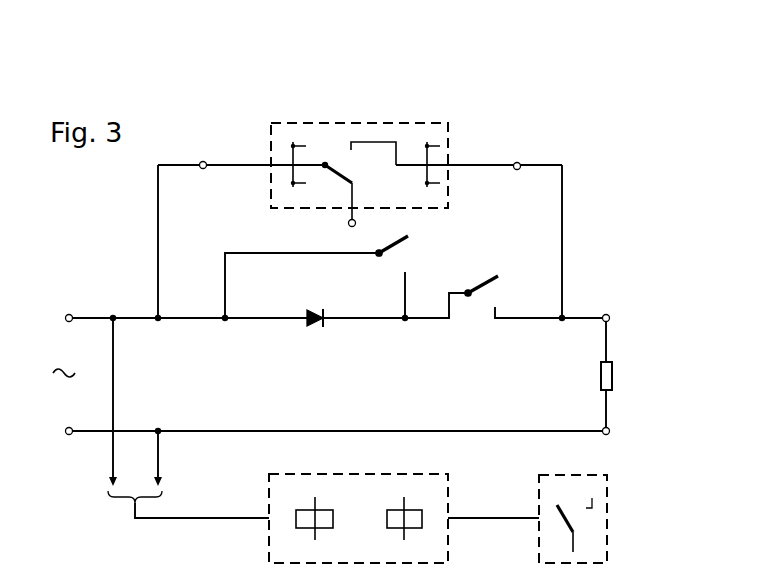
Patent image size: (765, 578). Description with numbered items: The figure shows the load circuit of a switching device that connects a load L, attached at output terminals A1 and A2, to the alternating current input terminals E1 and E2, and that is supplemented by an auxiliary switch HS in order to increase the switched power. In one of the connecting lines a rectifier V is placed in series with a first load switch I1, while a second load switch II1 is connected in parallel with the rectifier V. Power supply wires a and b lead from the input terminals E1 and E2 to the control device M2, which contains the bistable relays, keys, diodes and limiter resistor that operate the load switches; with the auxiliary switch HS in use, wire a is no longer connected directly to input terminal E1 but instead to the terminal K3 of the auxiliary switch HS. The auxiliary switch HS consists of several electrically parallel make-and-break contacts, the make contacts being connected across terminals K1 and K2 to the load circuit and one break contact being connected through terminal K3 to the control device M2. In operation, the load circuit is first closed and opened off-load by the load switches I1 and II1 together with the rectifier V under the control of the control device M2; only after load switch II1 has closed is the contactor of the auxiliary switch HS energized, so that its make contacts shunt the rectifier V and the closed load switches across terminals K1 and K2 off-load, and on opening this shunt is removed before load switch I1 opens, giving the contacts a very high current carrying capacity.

The input terminal E1 is at (56, 318).
The input terminal E2 is at (56, 431).
The output terminal A1 is at (621, 317).
The output terminal A2 is at (621, 431).
The terminal of the auxiliary switch K1 is at (204, 154).
The terminal of the auxiliary switch K2 is at (518, 155).
The terminal of the auxiliary switch K3 is at (338, 209).
The auxiliary switch HS is at (448, 183).
The rectifier V is at (315, 307).
The load L is at (614, 376).
The load switch I1 is at (491, 290).
The load switch II1 is at (403, 250).
The control device M2 is at (405, 466).
The wire a is at (100, 475).
The wire b is at (170, 475).